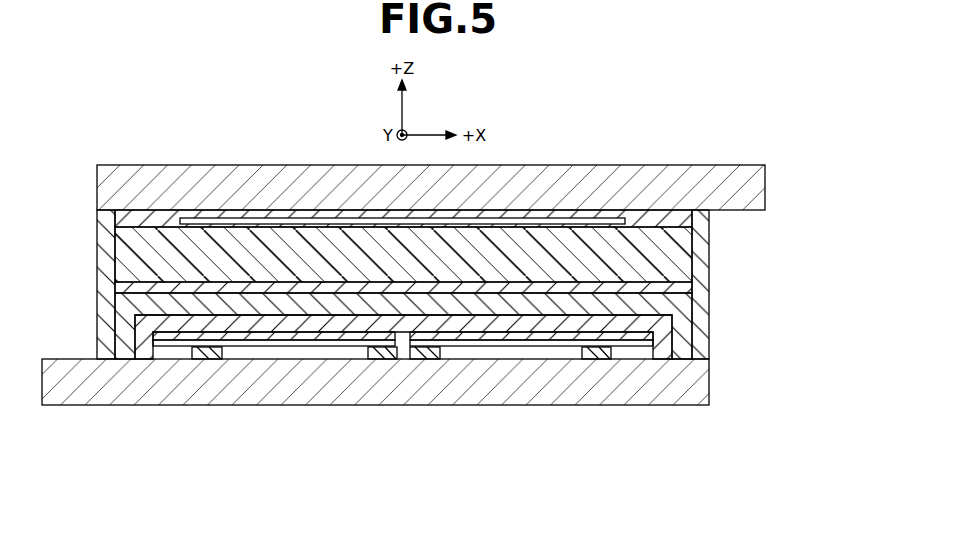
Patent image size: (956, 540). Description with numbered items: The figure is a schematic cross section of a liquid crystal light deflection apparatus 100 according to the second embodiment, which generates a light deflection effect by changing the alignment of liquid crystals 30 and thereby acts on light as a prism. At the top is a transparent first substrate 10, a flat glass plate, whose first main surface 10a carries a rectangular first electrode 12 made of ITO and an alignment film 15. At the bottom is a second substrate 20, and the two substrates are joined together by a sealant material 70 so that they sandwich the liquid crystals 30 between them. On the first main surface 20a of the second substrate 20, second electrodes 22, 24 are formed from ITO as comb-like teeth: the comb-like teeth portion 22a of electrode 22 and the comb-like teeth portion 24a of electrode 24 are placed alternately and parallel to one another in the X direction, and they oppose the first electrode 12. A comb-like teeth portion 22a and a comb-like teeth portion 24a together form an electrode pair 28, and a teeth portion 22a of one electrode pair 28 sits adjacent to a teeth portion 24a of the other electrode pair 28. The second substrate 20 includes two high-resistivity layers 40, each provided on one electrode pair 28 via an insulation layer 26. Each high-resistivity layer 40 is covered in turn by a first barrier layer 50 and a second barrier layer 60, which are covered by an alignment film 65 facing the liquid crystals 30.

The liquid crystal light deflection apparatus 100 is at (179, 141).
The first substrate 10 is at (766, 178).
The first main surface 10a is at (641, 212).
The first electrode 12 is at (180, 220).
The alignment film 15 is at (693, 216).
The liquid crystals 30 is at (680, 258).
The sealant material 70 is at (97, 255).
The alignment film 65 is at (116, 287).
The second barrier layer 60 is at (680, 305).
The first barrier layer 50 is at (136, 325).
The high-resistivity layer 40 is at (154, 337).
The insulation layer 26 is at (157, 352).
The second substrate 20 is at (709, 378).
The first main surface 20a is at (178, 353).
The second electrode 22 is at (395, 359).
The comb-like teeth portion 22a is at (515, 411).
The second electrode 24 is at (225, 359).
The comb-like teeth portion 24a is at (350, 411).
The electrode pair 28 is at (668, 478).